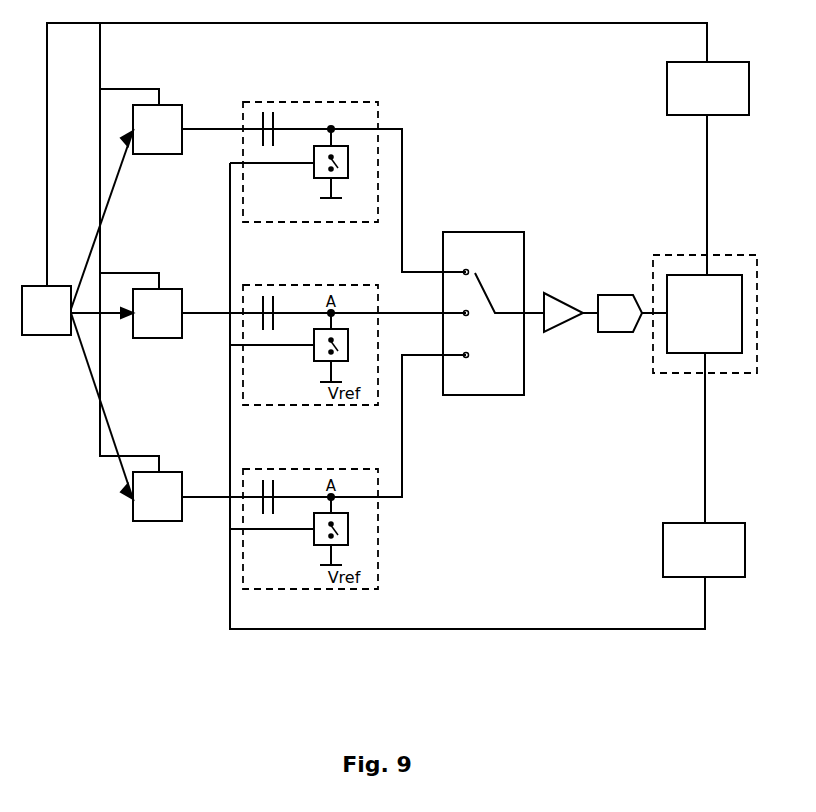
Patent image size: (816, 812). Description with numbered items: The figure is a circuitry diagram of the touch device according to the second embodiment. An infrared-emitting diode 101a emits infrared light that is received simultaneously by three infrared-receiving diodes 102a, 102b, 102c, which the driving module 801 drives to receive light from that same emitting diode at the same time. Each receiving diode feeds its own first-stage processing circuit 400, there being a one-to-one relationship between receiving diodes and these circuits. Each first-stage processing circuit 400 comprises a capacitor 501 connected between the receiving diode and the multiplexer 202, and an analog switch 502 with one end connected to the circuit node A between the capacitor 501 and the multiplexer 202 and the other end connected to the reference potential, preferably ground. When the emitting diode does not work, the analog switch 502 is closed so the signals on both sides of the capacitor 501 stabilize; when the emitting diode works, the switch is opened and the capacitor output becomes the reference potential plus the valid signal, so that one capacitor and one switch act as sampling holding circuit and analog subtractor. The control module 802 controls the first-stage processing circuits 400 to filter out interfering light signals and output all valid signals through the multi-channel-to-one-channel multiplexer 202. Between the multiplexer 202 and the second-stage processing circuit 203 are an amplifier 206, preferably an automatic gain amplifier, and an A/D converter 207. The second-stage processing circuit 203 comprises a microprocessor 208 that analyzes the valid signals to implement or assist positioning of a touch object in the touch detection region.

The infrared-emitting diode 101a is at (42, 335).
The infrared-receiving diode 102a is at (181, 105).
The infrared-receiving diode 102b is at (181, 289).
The infrared-receiving diode 102c is at (181, 472).
The first-stage processing circuit 400 is at (330, 139).
The capacitor 501 is at (275, 113).
The analog switch 502 is at (314, 175).
The multiplexer 202 is at (524, 232).
The amplifier 206 is at (544, 293).
The A/D converter 207 is at (598, 295).
The second-stage processing circuit 203 is at (694, 311).
The microprocessor 208 is at (667, 353).
The driving module 801 is at (667, 115).
The control module 802 is at (663, 523).